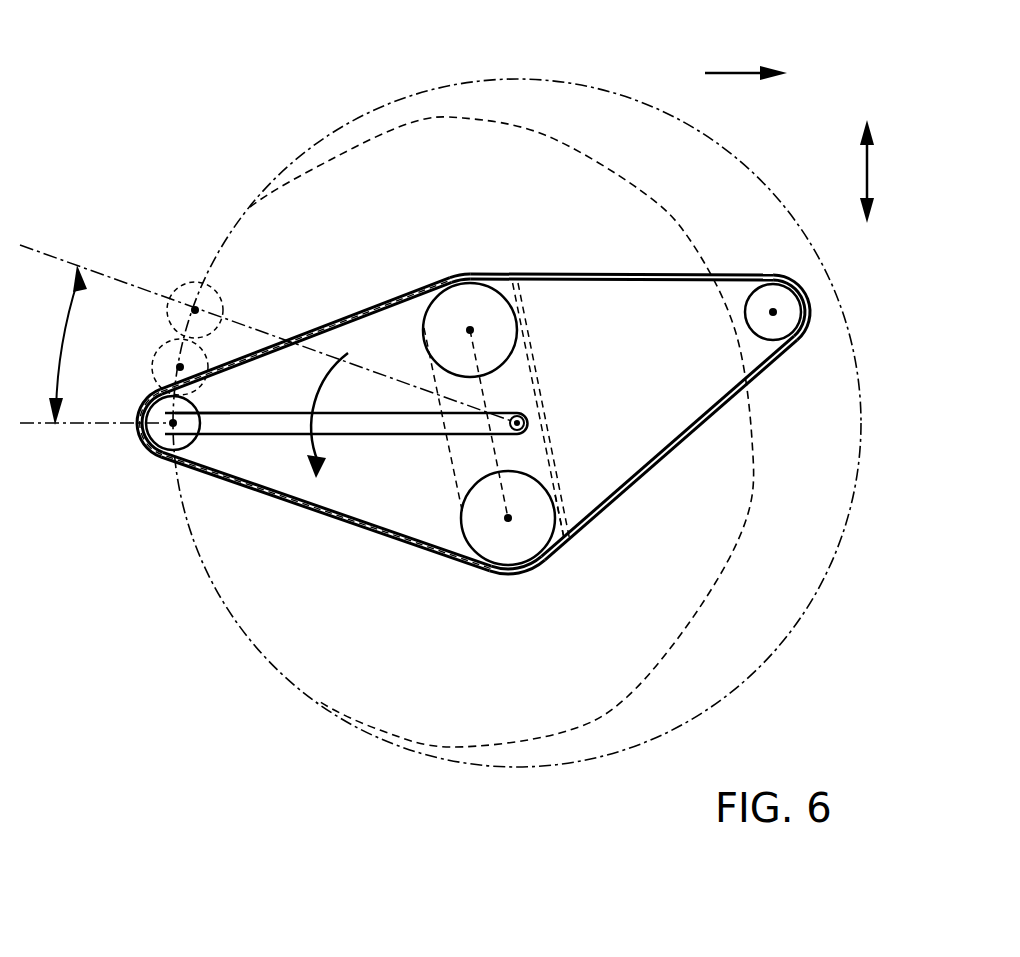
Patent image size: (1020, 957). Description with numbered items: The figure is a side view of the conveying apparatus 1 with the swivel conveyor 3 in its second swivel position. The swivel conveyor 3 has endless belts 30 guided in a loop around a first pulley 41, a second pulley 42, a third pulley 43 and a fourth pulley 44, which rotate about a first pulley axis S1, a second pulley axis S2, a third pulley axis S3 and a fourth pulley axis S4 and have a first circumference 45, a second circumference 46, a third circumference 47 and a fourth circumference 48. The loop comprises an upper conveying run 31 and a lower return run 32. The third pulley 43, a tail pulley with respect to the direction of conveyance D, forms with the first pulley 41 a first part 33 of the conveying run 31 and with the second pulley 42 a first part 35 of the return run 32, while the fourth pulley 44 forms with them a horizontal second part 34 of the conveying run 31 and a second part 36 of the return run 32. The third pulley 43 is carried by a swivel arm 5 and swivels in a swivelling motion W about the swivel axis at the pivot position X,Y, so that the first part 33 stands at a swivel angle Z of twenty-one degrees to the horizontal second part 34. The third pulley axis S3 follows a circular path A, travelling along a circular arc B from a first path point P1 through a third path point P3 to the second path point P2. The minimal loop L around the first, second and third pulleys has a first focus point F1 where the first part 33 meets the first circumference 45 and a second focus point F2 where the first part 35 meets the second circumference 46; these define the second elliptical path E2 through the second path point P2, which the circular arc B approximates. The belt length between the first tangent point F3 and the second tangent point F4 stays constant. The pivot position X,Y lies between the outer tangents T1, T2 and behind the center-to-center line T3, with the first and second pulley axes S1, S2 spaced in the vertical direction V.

The conveying apparatus 1 is at (135, 88).
The swivel conveyor 3 is at (820, 661).
The swivel arm 5 is at (386, 428).
The endless belt 30 is at (473, 381).
The conveying run 31 is at (343, 318).
The return run 32 is at (372, 532).
The first part of the conveying run 33 is at (280, 340).
The second part of the conveying run 34 is at (580, 275).
The first part of the return run 35 is at (284, 502).
The second part of the return run 36 is at (643, 477).
The first pulley 41 is at (470, 282).
The second pulley 42 is at (525, 550).
The third pulley 43 is at (160, 448).
The fourth pulley 44 is at (792, 328).
The first circumference 45 is at (523, 317).
The second circumference 46 is at (560, 503).
The third circumference 47 is at (208, 411).
The fourth circumference 48 is at (747, 293).
The circular path A is at (551, 82).
The circular arc B is at (158, 348).
The direction of conveyance D is at (746, 59).
The second elliptical path E2 is at (492, 120).
The first focus point F1 is at (440, 292).
The second focus point F2 is at (480, 567).
The first tangent point F3 is at (492, 307).
The second tangent point F4 is at (553, 550).
The minimal loop L is at (557, 450).
The first path point P1 is at (190, 310).
The second path point P2 is at (152, 440).
The third path point P3 is at (175, 367).
The first pulley axis S1 is at (470, 330).
The second pulley axis S2 is at (508, 520).
The third pulley axis S3 is at (147, 418).
The fourth pulley axis S4 is at (773, 312).
The outer tangent T1 is at (450, 483).
The outer tangent T2 is at (545, 390).
The center-to-center line T3 is at (490, 385).
The vertical direction V is at (879, 171).
The swivelling motion W is at (331, 424).
The swivel axis and pivot position X,Y is at (525, 421).
The swivel angle Z is at (268, 335).